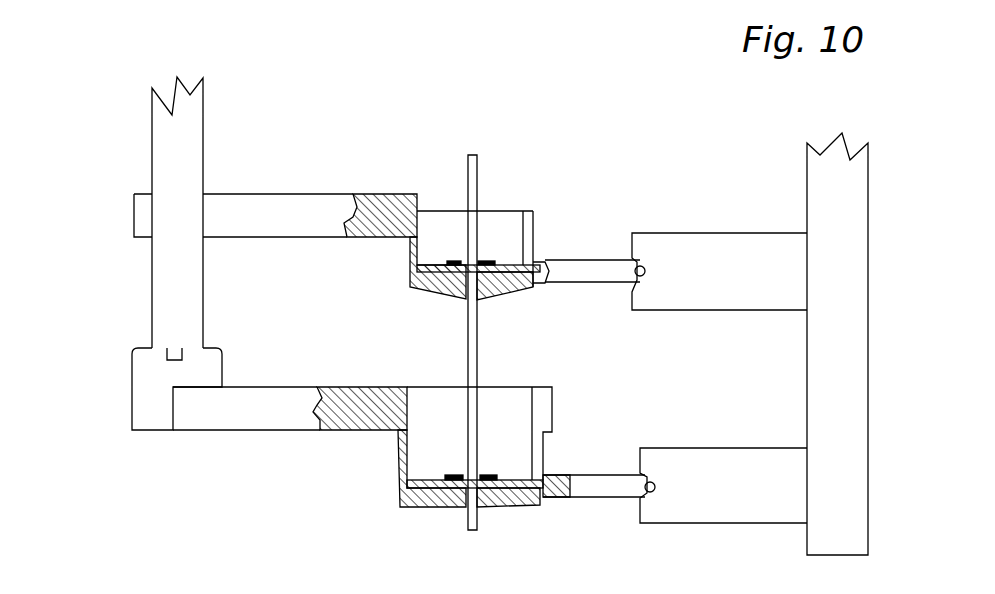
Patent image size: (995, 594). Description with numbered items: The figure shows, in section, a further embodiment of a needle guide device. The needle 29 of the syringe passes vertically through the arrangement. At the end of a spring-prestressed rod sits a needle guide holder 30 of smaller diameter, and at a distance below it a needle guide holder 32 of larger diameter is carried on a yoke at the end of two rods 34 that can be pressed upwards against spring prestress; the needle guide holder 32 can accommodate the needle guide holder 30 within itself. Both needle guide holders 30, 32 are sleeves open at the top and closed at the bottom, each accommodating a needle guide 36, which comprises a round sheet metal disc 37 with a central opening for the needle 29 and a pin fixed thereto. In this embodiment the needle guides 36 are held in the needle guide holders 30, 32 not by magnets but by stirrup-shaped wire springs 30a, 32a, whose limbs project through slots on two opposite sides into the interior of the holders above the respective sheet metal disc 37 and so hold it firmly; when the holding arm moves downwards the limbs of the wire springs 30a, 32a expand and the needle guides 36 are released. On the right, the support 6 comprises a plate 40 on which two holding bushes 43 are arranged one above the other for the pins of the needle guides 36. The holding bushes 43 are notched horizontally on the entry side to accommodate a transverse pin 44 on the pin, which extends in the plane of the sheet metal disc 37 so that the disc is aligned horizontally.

The support 6 is at (877, 344).
The needle 29 is at (478, 362).
The needle guide holder 30 is at (412, 245).
The wire spring 30a is at (485, 262).
The needle guide holder 32 is at (398, 455).
The wire spring 32a is at (490, 487).
The rod 34 is at (175, 300).
The needle guide 36 is at (556, 255).
The sheet metal disc 37 is at (508, 272).
The plate 40 is at (855, 367).
The holding bush 43 is at (722, 245).
The transverse pin 44 is at (655, 492).